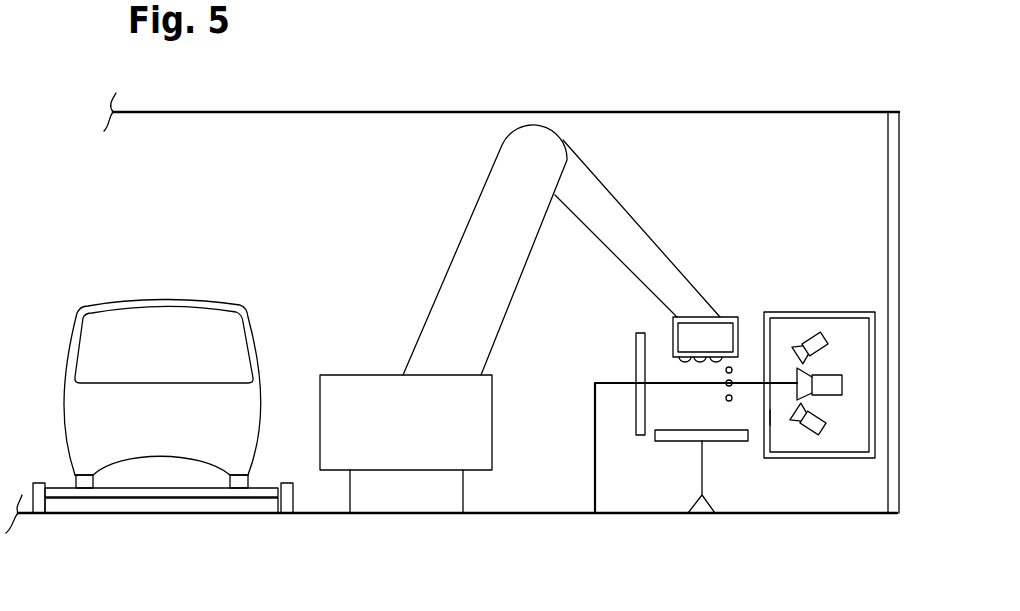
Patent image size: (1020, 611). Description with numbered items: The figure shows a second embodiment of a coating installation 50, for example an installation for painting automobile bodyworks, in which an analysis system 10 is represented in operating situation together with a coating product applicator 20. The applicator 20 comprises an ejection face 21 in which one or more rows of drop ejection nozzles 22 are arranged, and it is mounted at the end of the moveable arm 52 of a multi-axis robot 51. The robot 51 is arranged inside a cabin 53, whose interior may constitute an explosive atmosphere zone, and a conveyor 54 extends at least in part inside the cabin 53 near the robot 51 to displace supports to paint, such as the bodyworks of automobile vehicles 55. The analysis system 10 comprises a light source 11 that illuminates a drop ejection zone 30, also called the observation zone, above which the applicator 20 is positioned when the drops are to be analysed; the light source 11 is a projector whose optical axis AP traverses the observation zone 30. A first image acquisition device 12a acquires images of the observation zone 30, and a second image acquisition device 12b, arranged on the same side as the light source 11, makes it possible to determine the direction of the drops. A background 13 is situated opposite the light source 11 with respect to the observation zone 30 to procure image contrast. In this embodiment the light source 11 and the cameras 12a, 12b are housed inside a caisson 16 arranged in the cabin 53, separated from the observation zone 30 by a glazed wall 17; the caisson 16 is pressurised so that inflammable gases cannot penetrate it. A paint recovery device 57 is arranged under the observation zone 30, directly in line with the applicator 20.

The analysis system 10 is at (813, 377).
The light source 11 is at (825, 396).
The first image acquisition device 12a is at (810, 337).
The second image acquisition device 12b is at (808, 436).
The background 13 is at (635, 358).
The caisson 16 is at (838, 312).
The glazed wall 17 is at (767, 417).
The coating product applicator 20 is at (733, 317).
The ejection face 21 is at (683, 365).
The drop ejection nozzle 22 is at (737, 360).
The drop ejection zone 30 is at (687, 390).
The coating installation 50 is at (197, 537).
The multi-axis robot 51 is at (405, 322).
The moveable arm 52 is at (622, 233).
The cabin 53 is at (902, 132).
The conveyor 54 is at (63, 491).
The automobile vehicle 55 is at (255, 352).
The paint recovery device 57 is at (725, 441).
The optical axis AP is at (747, 386).